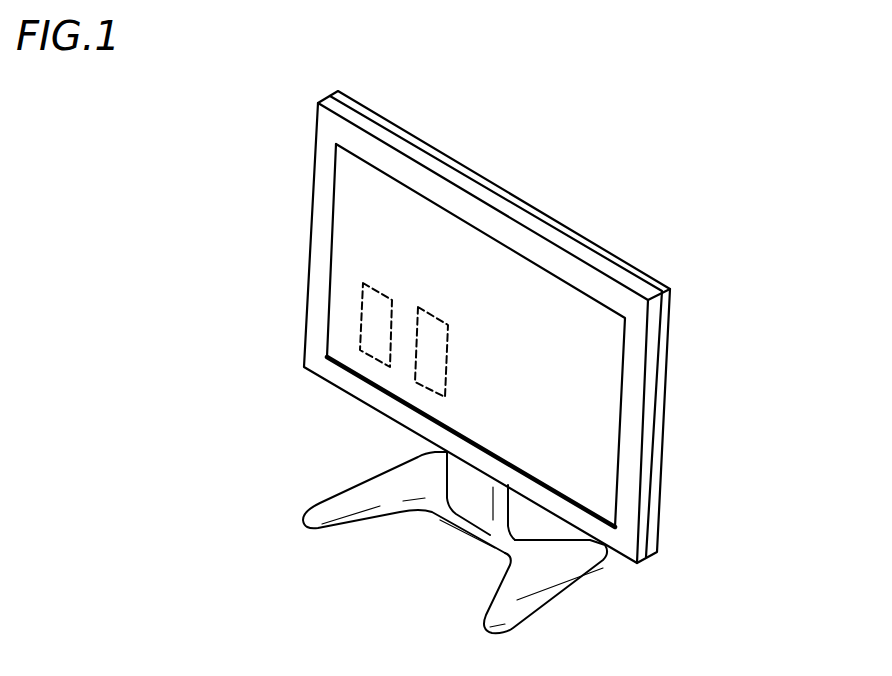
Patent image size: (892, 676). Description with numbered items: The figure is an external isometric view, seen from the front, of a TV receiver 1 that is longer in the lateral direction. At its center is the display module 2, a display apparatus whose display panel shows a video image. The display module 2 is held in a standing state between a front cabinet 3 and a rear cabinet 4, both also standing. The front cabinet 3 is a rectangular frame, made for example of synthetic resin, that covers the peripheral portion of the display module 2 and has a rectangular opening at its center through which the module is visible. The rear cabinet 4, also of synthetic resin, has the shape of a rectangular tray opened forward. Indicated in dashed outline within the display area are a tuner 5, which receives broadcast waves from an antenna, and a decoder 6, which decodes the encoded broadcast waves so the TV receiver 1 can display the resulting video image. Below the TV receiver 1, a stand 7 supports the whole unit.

The TV receiver 1 is at (615, 183).
The display module 2 is at (601, 379).
The front cabinet 3 is at (627, 490).
The rear cabinet 4 is at (660, 430).
The tuner 5 is at (370, 316).
The decoder 6 is at (422, 367).
The stand 7 is at (517, 600).